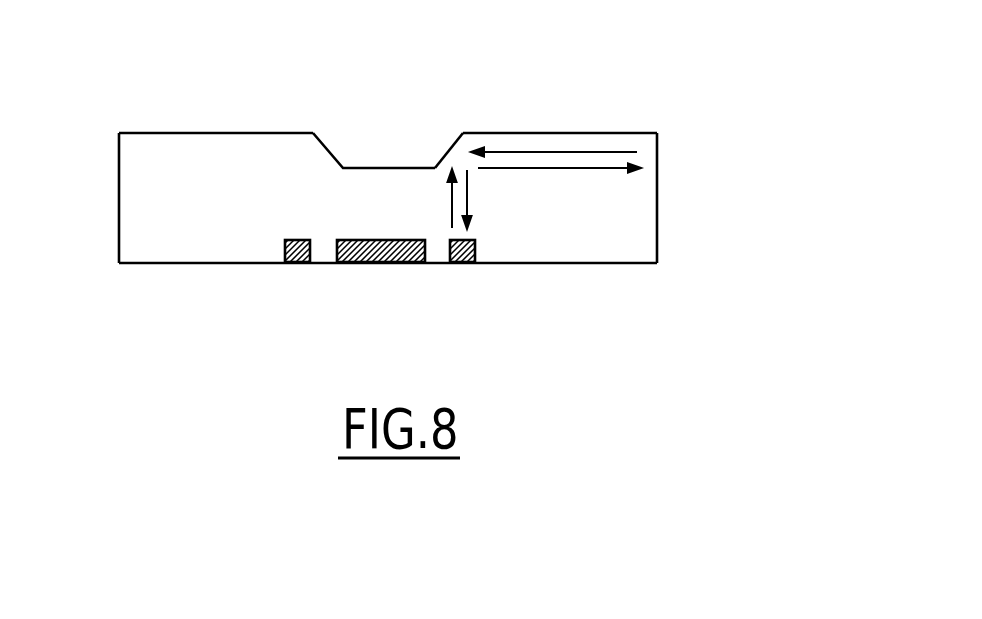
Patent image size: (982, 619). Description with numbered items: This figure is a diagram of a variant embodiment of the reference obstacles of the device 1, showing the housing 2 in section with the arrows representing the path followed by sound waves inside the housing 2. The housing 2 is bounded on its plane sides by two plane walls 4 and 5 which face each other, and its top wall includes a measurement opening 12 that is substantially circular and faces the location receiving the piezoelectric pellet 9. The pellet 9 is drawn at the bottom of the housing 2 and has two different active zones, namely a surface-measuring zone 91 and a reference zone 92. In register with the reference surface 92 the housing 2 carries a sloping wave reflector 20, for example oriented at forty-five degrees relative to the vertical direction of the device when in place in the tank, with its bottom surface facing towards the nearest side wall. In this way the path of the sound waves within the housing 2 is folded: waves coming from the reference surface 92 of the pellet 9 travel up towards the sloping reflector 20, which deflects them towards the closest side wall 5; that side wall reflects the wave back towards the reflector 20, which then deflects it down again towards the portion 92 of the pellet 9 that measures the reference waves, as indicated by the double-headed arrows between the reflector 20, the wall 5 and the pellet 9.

The optical device 1 is at (616, 112).
The housing 2 is at (165, 133).
The plane wall 4 is at (118, 180).
The plane wall 5 is at (658, 192).
The pellet 9 is at (282, 245).
The measurement opening 12 is at (362, 148).
The wave reflector 20 is at (449, 143).
The active zone 91 is at (358, 263).
The active zone 92 is at (476, 246).